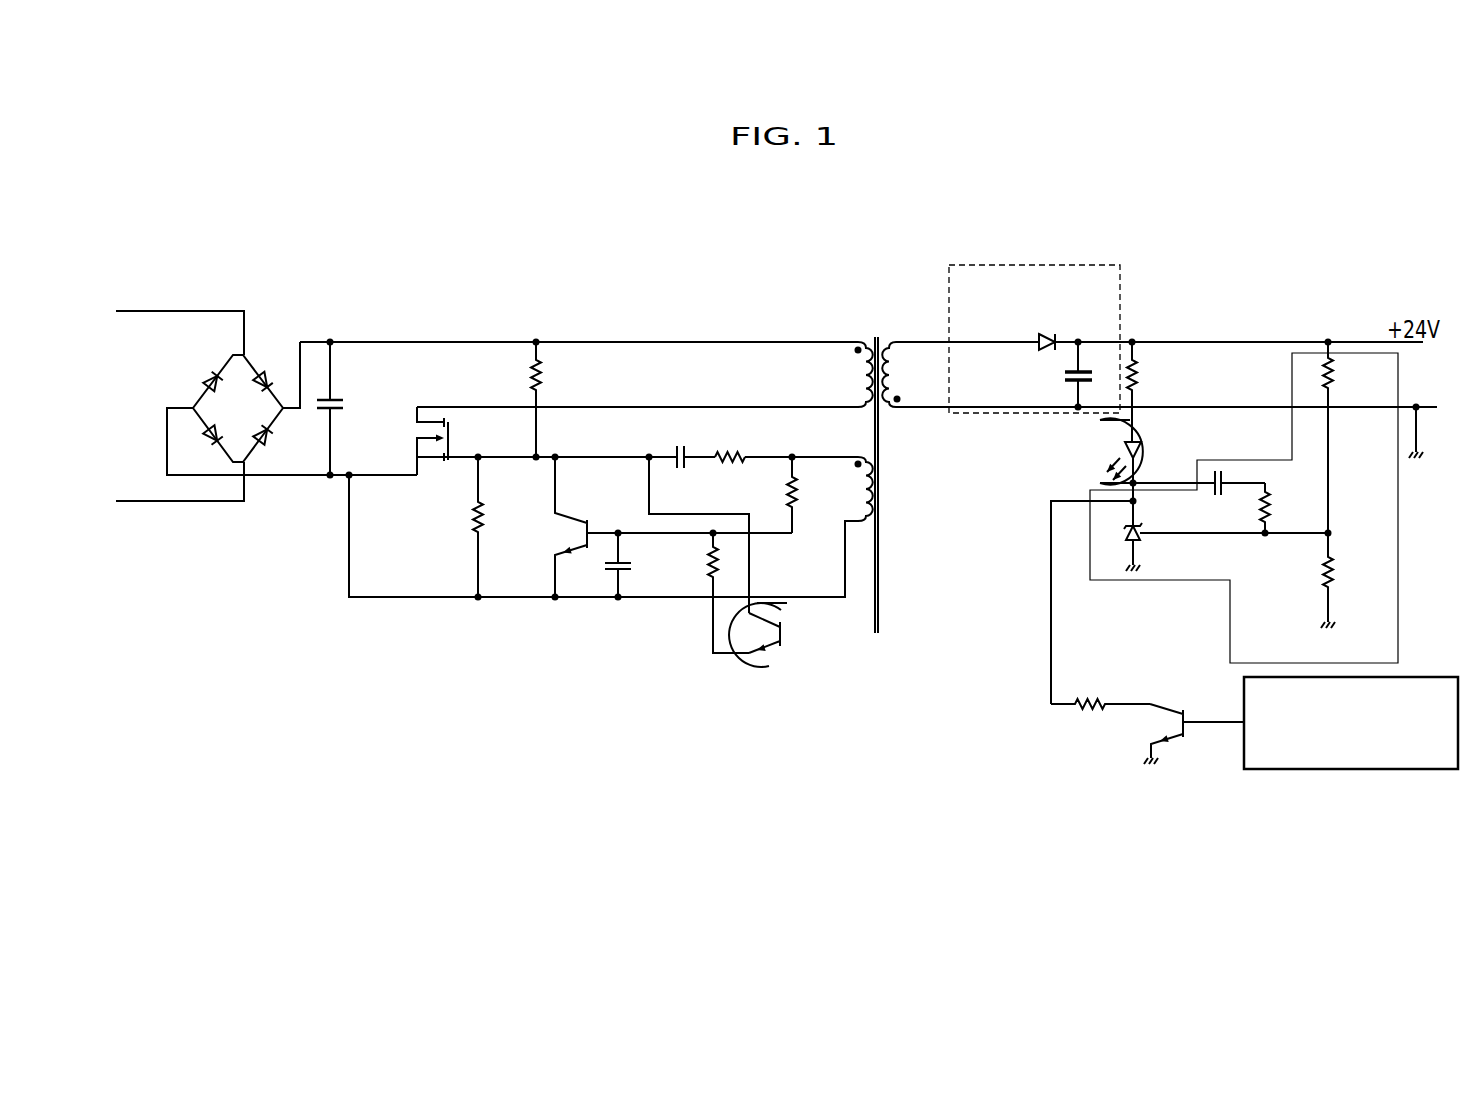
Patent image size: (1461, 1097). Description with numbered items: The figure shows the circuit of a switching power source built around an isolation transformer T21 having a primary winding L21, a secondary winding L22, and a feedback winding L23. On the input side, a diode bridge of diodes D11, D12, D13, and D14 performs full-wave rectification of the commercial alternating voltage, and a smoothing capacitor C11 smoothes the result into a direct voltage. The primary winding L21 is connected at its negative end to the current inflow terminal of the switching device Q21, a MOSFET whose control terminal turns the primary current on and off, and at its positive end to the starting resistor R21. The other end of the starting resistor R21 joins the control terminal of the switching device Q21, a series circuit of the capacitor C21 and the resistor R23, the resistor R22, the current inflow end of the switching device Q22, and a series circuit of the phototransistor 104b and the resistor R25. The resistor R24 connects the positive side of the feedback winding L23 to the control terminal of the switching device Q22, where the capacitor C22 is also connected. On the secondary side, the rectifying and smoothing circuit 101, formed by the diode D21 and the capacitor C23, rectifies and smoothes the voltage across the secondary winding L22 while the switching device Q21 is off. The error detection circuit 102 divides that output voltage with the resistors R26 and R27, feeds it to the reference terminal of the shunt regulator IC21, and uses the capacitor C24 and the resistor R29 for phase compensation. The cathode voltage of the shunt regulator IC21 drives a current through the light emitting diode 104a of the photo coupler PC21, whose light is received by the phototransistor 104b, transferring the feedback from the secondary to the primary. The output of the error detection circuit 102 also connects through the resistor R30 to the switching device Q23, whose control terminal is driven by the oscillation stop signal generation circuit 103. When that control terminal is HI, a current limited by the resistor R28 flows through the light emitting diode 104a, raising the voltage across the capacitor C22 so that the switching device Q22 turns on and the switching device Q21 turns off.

The rectifying and smoothing circuit 101 is at (1090, 265).
The error detection circuit 102 is at (1102, 581).
The oscillation stop signal generation circuit 103 is at (1368, 773).
The light emitting diode 104a is at (1122, 445).
The phototransistor 104b is at (786, 634).
The diode D11 is at (198, 366).
The diode D12 is at (272, 366).
The diode D13 is at (198, 452).
The diode D14 is at (277, 452).
The smoothing capacitor C11 is at (352, 409).
The switching device Q21 is at (455, 441).
The starting resistor R21 is at (512, 400).
The resistor R22 is at (453, 527).
The switching device Q22 is at (657, 527).
The capacitor C22 is at (599, 565).
The capacitor C21 is at (667, 441).
The resistor R23 is at (729, 438).
The resistor R24 is at (767, 494).
The resistor R25 is at (705, 592).
The isolation transformer T21 is at (874, 470).
The primary winding L21 is at (846, 374).
The secondary winding L22 is at (908, 374).
The feedback winding L23 is at (845, 489).
The photo coupler PC21 is at (989, 558).
The diode D21 is at (1049, 327).
The capacitor C23 is at (1055, 375).
The resistor R28 is at (1155, 391).
The capacitor C24 is at (1215, 500).
The resistor R29 is at (1287, 510).
The shunt regulator IC21 is at (1169, 536).
The resistor R26 is at (1350, 438).
The resistor R27 is at (1349, 580).
The resistor R30 is at (1100, 721).
The switching device Q23 is at (1194, 723).